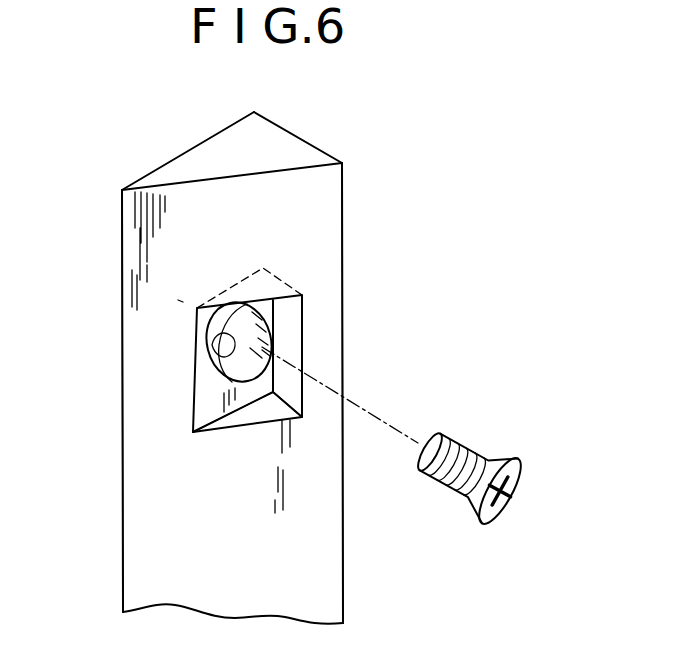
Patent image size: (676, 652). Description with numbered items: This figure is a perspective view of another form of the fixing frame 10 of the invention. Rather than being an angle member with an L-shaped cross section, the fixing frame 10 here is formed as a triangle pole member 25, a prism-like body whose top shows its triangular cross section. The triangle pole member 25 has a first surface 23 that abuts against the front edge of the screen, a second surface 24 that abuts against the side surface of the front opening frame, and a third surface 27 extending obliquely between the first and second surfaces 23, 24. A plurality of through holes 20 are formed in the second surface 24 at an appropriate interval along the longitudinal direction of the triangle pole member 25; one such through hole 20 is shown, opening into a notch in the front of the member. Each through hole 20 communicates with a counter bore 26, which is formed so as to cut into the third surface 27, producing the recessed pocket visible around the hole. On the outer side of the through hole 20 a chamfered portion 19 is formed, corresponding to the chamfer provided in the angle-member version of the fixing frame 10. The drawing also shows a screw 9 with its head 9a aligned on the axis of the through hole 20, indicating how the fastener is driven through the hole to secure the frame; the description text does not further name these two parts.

The fixing frame 10 is at (147, 172).
The first surface 23 is at (293, 133).
The second surface 24 is at (197, 143).
The triangle pole member 25 is at (310, 210).
The third surface 27 is at (163, 288).
The chamfered portion 19 is at (263, 338).
The through hole 20 is at (256, 352).
The counter bore 26 is at (270, 403).
The screw 9 is at (491, 491).
The screw head 9a is at (508, 462).